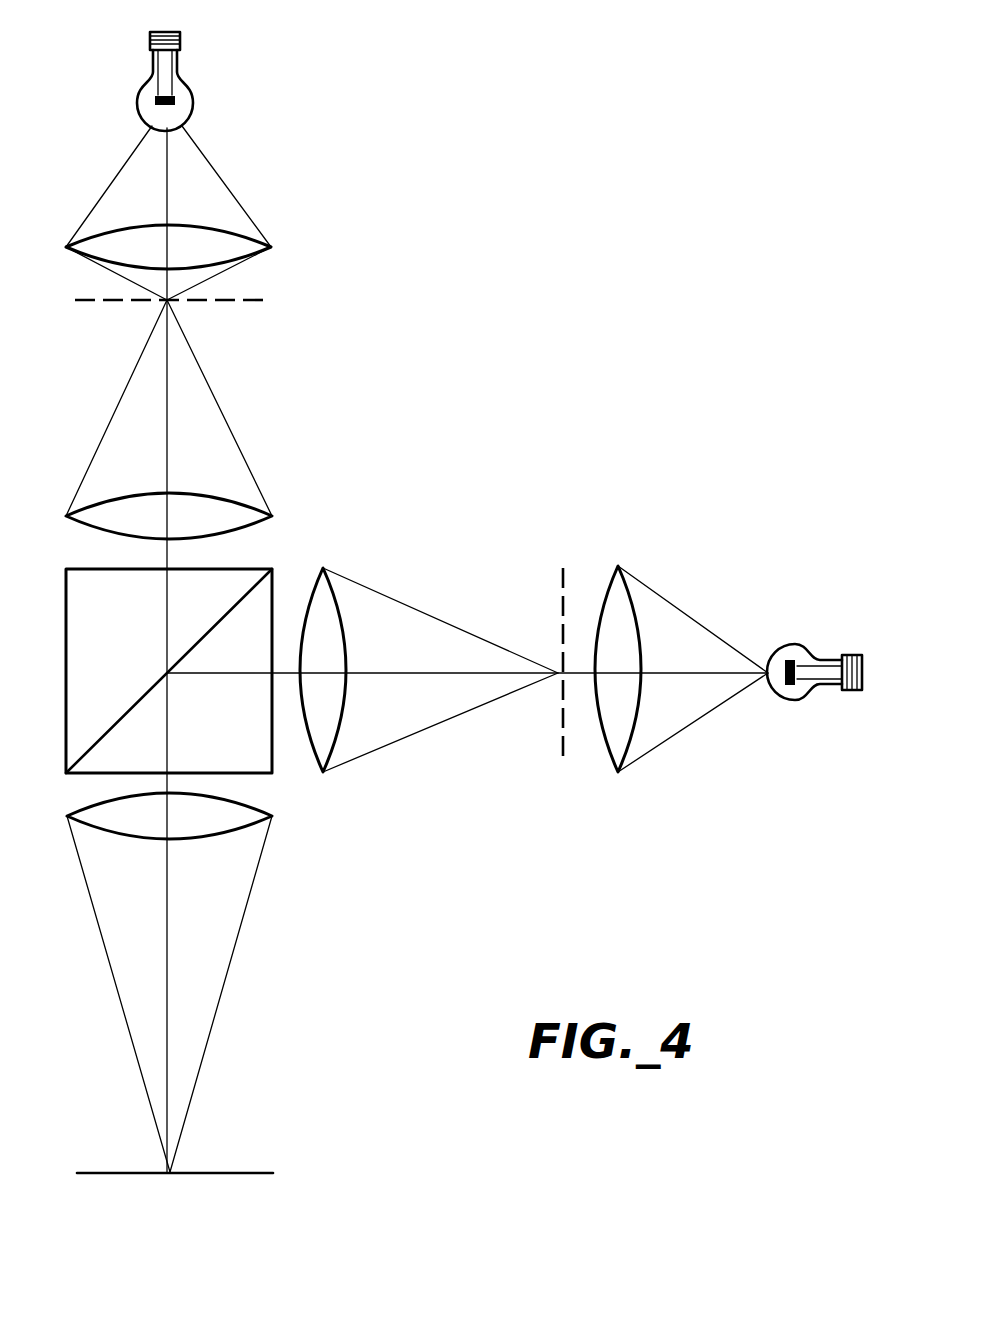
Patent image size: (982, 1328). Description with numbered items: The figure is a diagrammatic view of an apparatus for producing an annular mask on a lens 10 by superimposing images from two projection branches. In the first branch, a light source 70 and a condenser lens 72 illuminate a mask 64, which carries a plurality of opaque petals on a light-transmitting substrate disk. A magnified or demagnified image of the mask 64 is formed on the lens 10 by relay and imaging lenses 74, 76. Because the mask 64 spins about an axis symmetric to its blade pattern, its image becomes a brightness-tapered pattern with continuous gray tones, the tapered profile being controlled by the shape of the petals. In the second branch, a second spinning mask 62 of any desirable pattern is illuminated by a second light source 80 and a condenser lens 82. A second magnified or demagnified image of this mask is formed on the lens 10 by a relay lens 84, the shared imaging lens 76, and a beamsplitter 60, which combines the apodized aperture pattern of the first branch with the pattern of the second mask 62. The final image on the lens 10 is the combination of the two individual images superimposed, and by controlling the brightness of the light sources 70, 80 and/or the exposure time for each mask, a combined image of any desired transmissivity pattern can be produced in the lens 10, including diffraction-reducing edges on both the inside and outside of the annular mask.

The lens 10 is at (258, 1172).
The beamsplitter 60 is at (80, 569).
The second spinning mask 62 is at (563, 570).
The mask 64 is at (250, 298).
The light source 70 is at (190, 97).
The condenser lens 72 is at (272, 247).
The relay lens 74 is at (272, 516).
The imaging lens 76 is at (272, 816).
The second light source 80 is at (797, 642).
The condenser lens 82 is at (618, 566).
The relay lens 84 is at (323, 568).